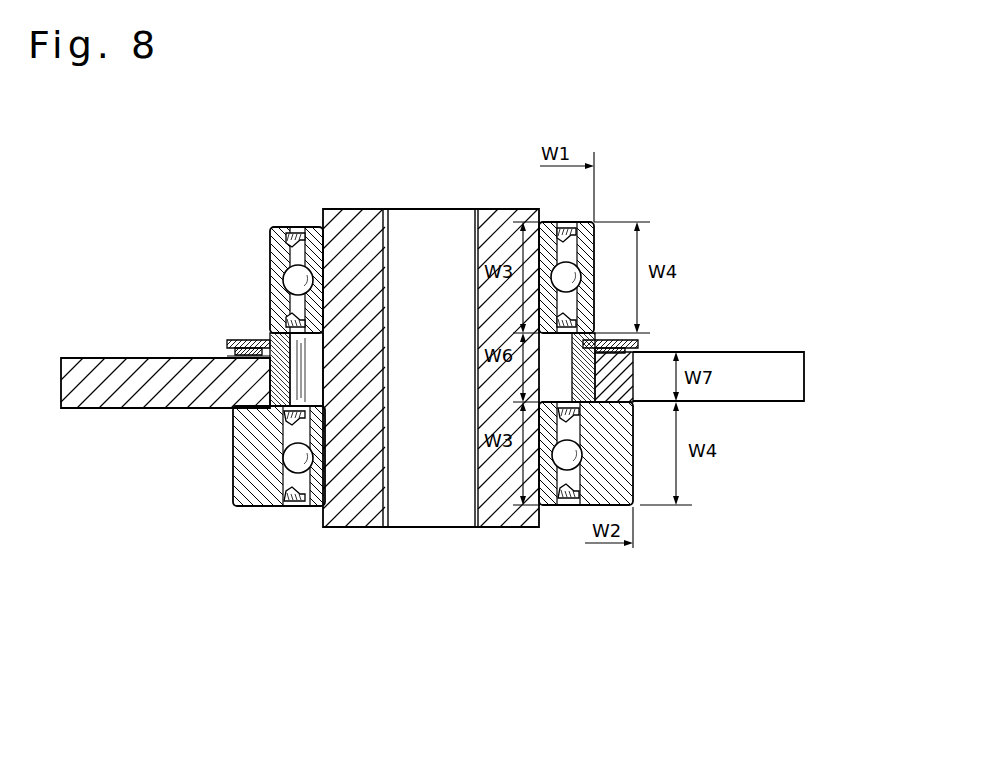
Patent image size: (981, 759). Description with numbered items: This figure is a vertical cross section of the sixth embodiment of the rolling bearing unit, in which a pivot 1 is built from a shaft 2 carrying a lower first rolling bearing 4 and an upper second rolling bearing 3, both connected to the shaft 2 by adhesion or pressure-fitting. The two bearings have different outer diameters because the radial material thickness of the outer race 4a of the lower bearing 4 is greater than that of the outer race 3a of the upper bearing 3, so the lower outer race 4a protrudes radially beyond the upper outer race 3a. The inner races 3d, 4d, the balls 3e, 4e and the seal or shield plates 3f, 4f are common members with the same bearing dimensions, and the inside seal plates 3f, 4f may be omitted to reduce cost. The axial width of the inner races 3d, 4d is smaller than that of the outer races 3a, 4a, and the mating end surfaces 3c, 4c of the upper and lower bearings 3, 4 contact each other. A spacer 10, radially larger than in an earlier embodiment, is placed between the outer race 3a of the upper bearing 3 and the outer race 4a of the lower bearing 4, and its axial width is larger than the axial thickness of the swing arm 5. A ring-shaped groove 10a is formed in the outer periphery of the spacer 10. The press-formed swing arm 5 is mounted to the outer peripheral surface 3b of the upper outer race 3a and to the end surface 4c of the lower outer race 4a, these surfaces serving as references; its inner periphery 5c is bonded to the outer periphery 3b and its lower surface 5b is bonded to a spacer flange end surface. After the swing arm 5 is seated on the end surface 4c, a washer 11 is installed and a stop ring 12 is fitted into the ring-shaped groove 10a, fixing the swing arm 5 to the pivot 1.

The pivot 1 is at (371, 208).
The shaft 2 is at (346, 211).
The second rolling bearing 3 is at (319, 249).
The outer race of the second rolling bearing 3a is at (273, 278).
The outer peripheral surface of the outer race 3b is at (273, 320).
The mating end surface of the upper ball bearing 3c is at (276, 332).
The inner race of the second rolling bearing 3d is at (323, 247).
The balls of the second rolling bearing 3e is at (273, 246).
The seal or shield plate of the second rolling bearing 3f is at (296, 229).
The first rolling bearing 4 is at (276, 487).
The outer race of the first rolling bearing 4a is at (242, 488).
The end surface of the outer race of the first rolling bearing 4c is at (236, 405).
The inner race of the first rolling bearing 4d is at (325, 486).
The balls of the first rolling bearing 4e is at (298, 462).
The seal or shield plate of the first rolling bearing 4f is at (302, 413).
The swing arm 5 is at (106, 366).
The lower surface of the swing arm 5b is at (256, 418).
The inner periphery of the swing arm 5c is at (234, 358).
The spacer 10 is at (340, 367).
The ring-shaped groove 10a is at (325, 350).
The washer 11 is at (258, 349).
The stop ring 12 is at (230, 341).